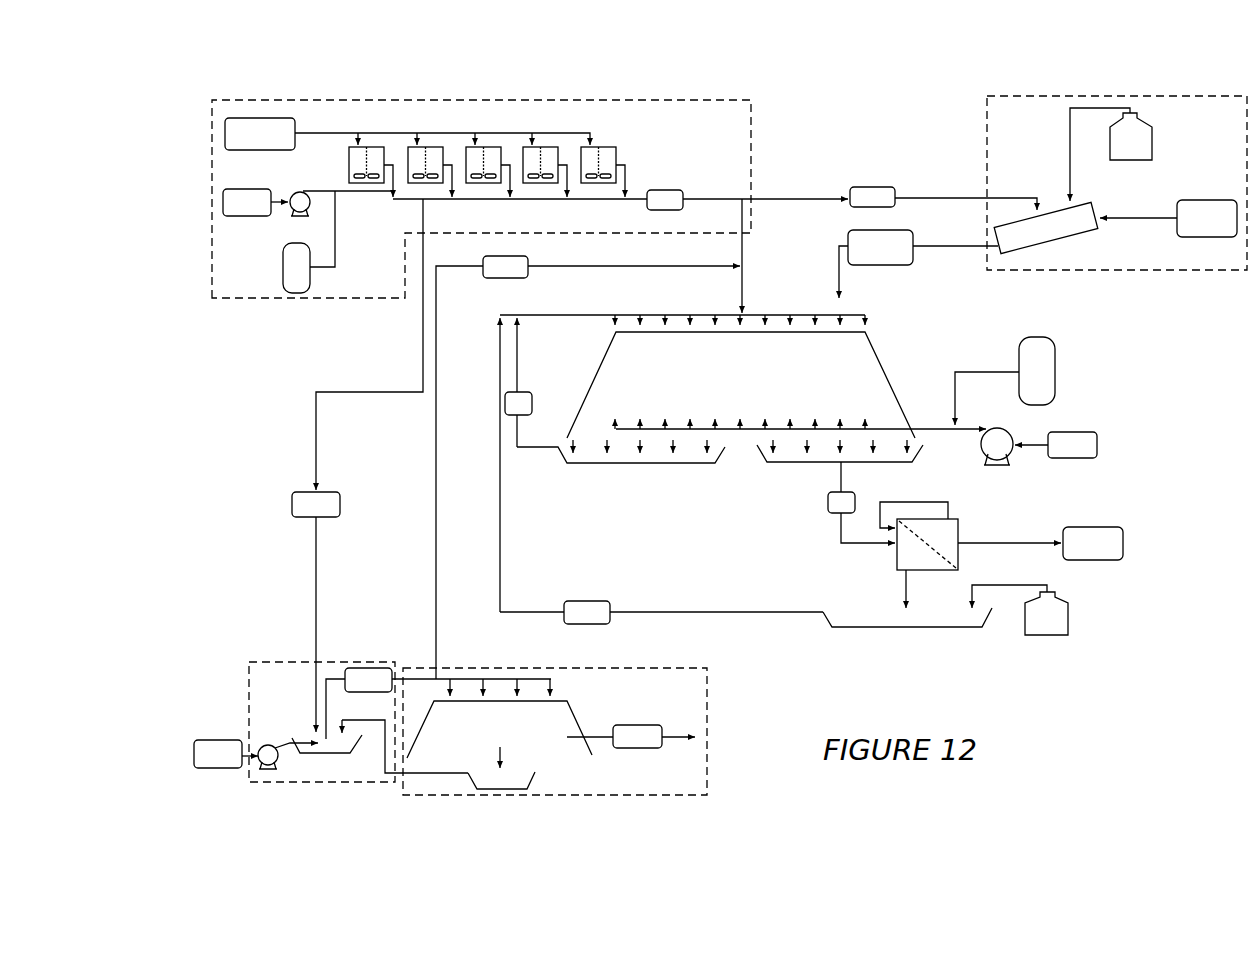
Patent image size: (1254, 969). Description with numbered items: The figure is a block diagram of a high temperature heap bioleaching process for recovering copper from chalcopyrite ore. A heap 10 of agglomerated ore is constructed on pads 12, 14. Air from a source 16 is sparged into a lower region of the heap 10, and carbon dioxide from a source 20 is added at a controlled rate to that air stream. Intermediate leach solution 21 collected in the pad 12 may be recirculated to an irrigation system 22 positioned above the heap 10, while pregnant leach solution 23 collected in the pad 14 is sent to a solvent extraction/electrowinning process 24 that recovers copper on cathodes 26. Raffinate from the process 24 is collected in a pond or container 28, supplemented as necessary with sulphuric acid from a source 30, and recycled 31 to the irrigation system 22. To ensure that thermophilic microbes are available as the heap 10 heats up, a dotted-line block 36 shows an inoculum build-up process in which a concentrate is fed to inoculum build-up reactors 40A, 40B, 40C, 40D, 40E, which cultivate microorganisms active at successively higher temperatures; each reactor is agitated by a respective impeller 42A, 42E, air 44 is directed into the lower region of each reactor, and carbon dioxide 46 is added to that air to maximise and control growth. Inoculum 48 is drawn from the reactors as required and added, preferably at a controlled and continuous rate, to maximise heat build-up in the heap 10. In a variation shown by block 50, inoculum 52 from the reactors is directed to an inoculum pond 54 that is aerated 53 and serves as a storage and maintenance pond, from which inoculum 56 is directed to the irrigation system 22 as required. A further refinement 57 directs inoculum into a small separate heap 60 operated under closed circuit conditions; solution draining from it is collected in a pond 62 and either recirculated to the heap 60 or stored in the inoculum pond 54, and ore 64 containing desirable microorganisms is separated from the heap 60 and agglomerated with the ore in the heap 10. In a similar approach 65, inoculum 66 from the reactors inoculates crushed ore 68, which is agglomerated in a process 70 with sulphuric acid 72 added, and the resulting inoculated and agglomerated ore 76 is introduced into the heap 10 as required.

The heap 10 is at (887, 373).
The pad 12 is at (583, 465).
The pad 14 is at (908, 463).
The air source 16 is at (1096, 446).
The carbon dioxide source 20 is at (1045, 388).
The intermediate leach solution 21 is at (531, 396).
The irrigation system 22 is at (810, 313).
The pregnant leach solution 23 is at (827, 512).
The solvent extraction/electrowinning process 24 is at (898, 550).
The cathodes 26 is at (1118, 543).
The pond or container 28 is at (225, 122).
The sulphuric acid source 30 is at (1058, 622).
The raffinate recycle 31 is at (610, 601).
The inoculum build-up process block 36 is at (267, 300).
The inoculum build-up reactor 40A is at (375, 150).
The inoculum build-up reactor 40B is at (433, 150).
The inoculum build-up reactor 40C is at (493, 150).
The inoculum build-up reactor 40D is at (552, 150).
The inoculum build-up reactor 40E is at (608, 150).
The impeller 42A is at (353, 176).
The impeller 42E is at (612, 175).
The air 44 is at (248, 217).
The carbon dioxide 46 is at (305, 280).
The inoculum 48 is at (685, 193).
The inoculum pond variation block 50 is at (293, 783).
The inoculum 52 is at (292, 508).
The aeration 53 is at (203, 747).
The inoculum pond 54 is at (340, 757).
The inoculum 56 is at (530, 272).
The separate heap refinement 57 is at (612, 797).
The small separate heap 60 is at (573, 713).
The pond 62 is at (510, 790).
The ore 64 is at (636, 748).
The crushed ore inoculation approach 65 is at (1152, 272).
The inoculum 66 is at (876, 187).
The crushed ore 68 is at (1198, 236).
The agglomeration process 70 is at (1010, 251).
The sulphuric acid 72 is at (1151, 146).
The agglomerated ore 76 is at (898, 263).